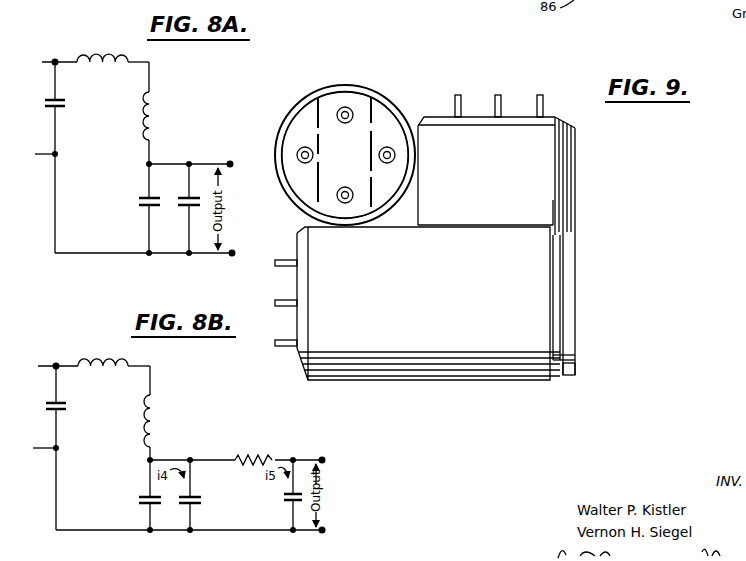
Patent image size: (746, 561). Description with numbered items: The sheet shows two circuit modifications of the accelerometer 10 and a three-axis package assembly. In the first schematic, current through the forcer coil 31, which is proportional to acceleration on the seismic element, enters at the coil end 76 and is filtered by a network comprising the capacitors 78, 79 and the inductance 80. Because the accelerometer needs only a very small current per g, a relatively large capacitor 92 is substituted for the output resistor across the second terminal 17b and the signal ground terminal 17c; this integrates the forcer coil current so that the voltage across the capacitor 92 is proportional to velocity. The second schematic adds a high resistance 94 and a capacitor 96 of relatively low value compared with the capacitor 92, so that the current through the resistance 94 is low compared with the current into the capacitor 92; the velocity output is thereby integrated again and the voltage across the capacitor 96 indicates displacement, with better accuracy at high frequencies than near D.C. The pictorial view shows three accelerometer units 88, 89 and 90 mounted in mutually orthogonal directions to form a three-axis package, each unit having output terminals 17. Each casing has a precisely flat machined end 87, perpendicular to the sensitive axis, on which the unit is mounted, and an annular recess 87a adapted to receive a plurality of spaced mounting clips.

In FIG. 9, the accelerometer 10 is at (286, 113).
In FIG. 9, the output terminals 17 is at (378, 156).
In FIG. 8A, the second terminal 17b is at (229, 161).
In FIG. 8B, the second terminal 17b is at (320, 458).
In FIG. 8A, the signal ground terminal 17c is at (229, 257).
In FIG. 8B, the signal ground terminal 17c is at (311, 534).
In FIG. 8A, the forcer coil 31 is at (98, 55).
In FIG. 8B, the forcer coil 31 is at (100, 359).
In FIG. 8A, the end of forcer coil 76 is at (64, 46).
In FIG. 8B, the end of forcer coil 76 is at (57, 364).
In FIG. 8A, the capacitor 78 is at (66, 103).
In FIG. 8B, the capacitor 78 is at (66, 409).
In FIG. 8A, the capacitor 79 is at (138, 201).
In FIG. 8B, the capacitor 79 is at (139, 501).
In FIG. 8A, the inductance 80 is at (157, 116).
In FIG. 8B, the inductance 80 is at (157, 420).
In FIG. 9, the end of casing 87 is at (576, 305).
In FIG. 9, the annular recess 87a is at (556, 372).
In FIG. 9, the accelerometer unit 88 is at (452, 299).
In FIG. 9, the accelerometer unit 89 is at (500, 179).
In FIG. 9, the accelerometer unit 90 is at (381, 120).
In FIG. 8A, the capacitor 92 is at (178, 206).
In FIG. 8B, the capacitor 92 is at (203, 500).
In FIG. 8B, the high resistance 94 is at (250, 455).
In FIG. 8B, the capacitor 96 is at (284, 498).